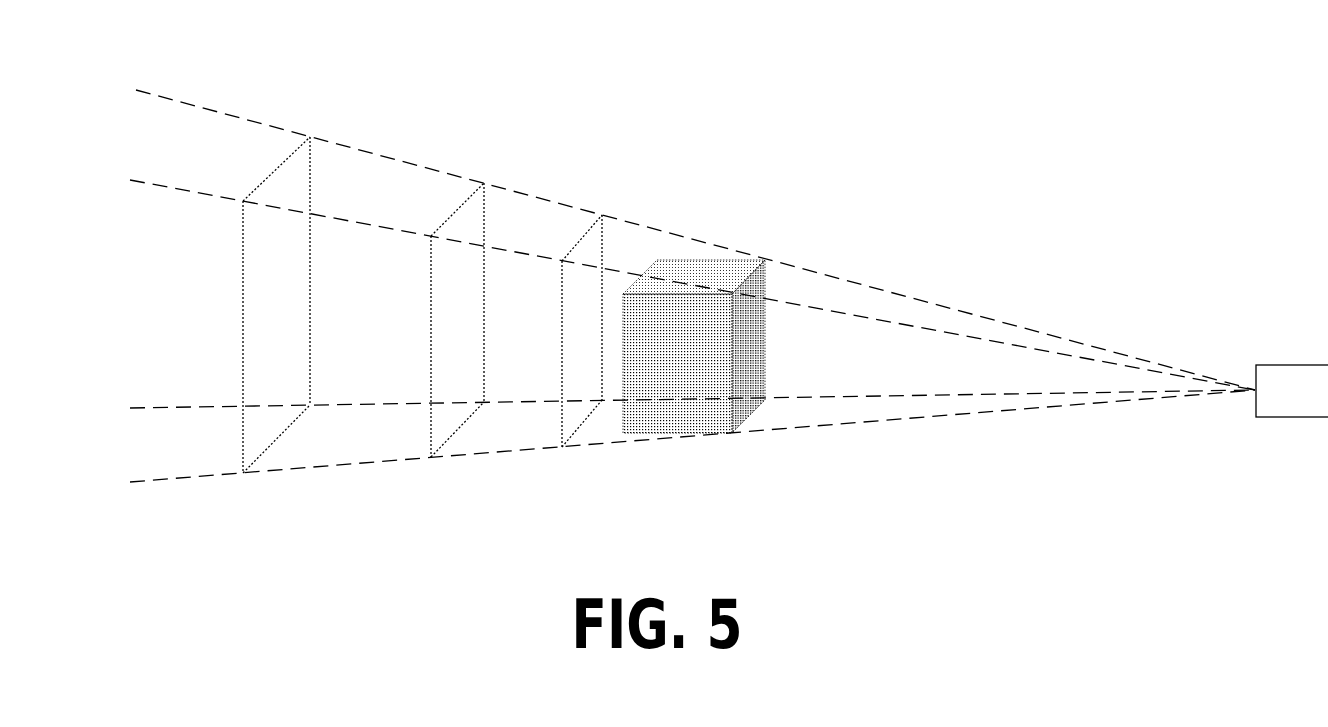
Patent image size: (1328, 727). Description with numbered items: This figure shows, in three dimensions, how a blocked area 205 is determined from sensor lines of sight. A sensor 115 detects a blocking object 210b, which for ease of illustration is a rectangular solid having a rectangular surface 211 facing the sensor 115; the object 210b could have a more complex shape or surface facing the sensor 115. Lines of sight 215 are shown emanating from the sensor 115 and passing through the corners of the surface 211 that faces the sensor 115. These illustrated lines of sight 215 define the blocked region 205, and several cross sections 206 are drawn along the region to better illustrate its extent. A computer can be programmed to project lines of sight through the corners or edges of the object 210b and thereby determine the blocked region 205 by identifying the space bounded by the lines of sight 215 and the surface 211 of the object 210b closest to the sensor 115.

The lines of sight 215 is at (170, 100).
The cross sections 206 is at (243, 335).
The blocked area 205 is at (146, 266).
The object 210b is at (698, 374).
The rectangular surface 211 is at (754, 335).
The sensor 115 is at (1313, 403).